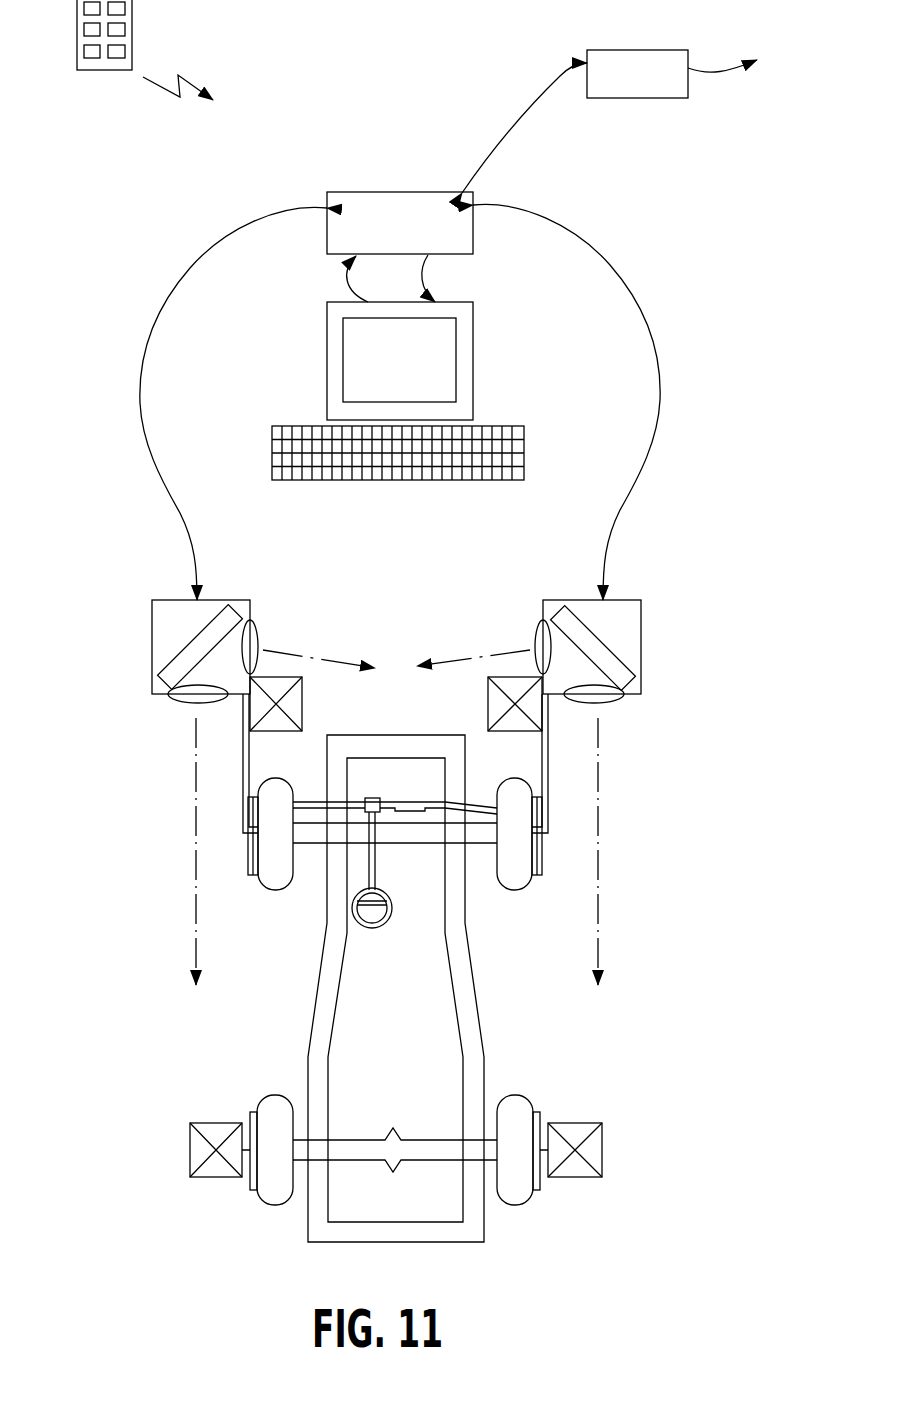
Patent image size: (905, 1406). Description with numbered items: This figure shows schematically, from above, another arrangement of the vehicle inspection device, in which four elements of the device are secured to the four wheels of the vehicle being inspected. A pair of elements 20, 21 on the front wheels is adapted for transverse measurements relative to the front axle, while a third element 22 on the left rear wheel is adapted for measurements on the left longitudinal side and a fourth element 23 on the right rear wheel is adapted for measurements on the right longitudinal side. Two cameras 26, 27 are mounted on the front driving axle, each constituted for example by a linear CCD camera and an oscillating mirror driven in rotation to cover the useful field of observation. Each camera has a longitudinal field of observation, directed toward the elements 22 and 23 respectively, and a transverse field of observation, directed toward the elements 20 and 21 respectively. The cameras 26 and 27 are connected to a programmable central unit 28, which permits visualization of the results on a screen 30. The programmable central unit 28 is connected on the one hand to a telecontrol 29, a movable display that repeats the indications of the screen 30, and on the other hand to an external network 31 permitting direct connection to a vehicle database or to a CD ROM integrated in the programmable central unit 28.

The element of the device 20 is at (302, 698).
The element of the device 21 is at (488, 705).
The third element 22 is at (217, 1123).
The fourth element 23 is at (583, 1123).
The camera 26 is at (192, 642).
The camera 27 is at (602, 642).
The programmable central unit 28 is at (372, 192).
The telecontrol 29 is at (77, 22).
The screen 30 is at (327, 385).
The external network 31 is at (637, 50).